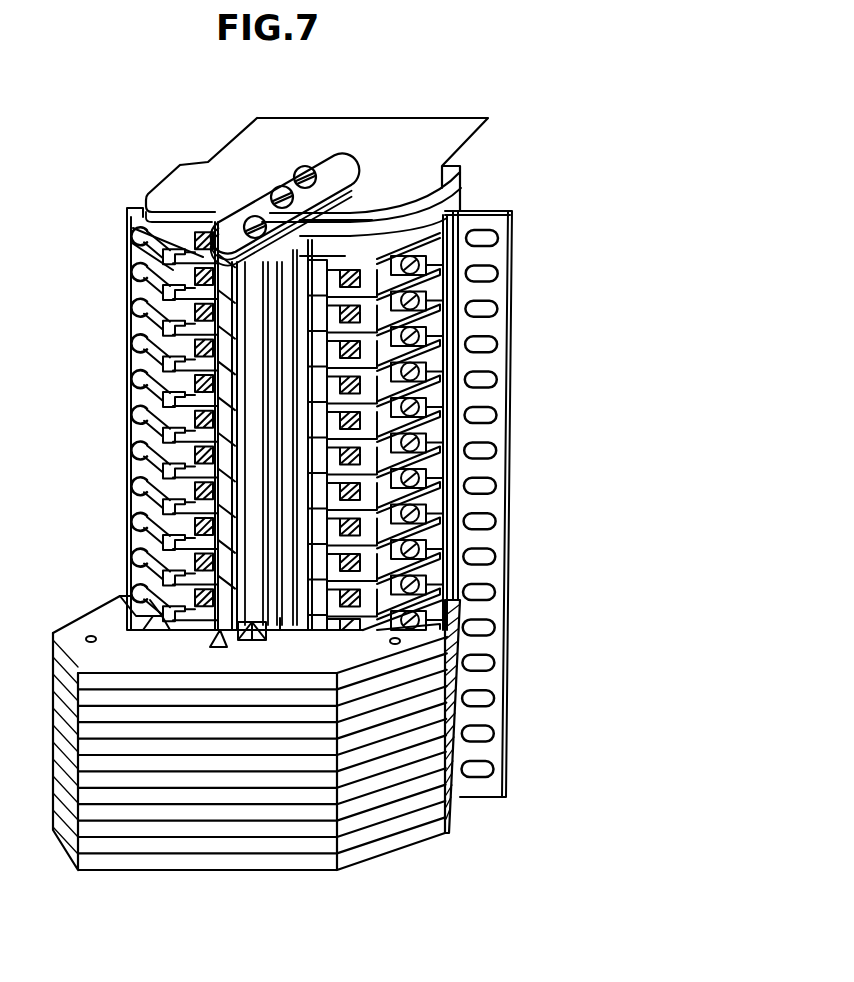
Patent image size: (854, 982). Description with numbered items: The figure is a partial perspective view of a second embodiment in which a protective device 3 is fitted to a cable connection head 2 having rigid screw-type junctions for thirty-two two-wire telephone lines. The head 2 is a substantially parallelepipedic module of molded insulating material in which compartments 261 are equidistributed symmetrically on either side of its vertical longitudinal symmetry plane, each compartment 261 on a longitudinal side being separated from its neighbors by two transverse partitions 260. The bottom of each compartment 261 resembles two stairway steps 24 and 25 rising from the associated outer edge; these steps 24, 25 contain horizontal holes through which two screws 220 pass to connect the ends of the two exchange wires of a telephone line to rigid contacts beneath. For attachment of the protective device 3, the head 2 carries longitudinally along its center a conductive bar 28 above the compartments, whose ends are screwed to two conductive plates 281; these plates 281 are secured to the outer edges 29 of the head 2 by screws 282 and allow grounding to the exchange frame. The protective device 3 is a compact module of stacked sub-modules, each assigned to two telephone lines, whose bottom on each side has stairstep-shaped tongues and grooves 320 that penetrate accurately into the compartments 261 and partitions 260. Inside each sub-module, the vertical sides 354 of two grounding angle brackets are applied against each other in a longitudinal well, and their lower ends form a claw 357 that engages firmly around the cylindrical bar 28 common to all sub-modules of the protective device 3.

The cable connection head 2 is at (520, 130).
The protective device 3 is at (65, 530).
The step 24 is at (430, 368).
The step 25 is at (435, 385).
The conductive bar 28 is at (255, 304).
The outer edge 29 is at (408, 118).
The screw 220 is at (430, 262).
The transverse partition 260 is at (437, 313).
The compartment 261 is at (503, 194).
The conductive plate 281 is at (262, 183).
The screw 282 is at (318, 168).
The tongues and grooves 320 is at (130, 606).
The vertical side 354 is at (247, 640).
The claw 357 is at (273, 642).